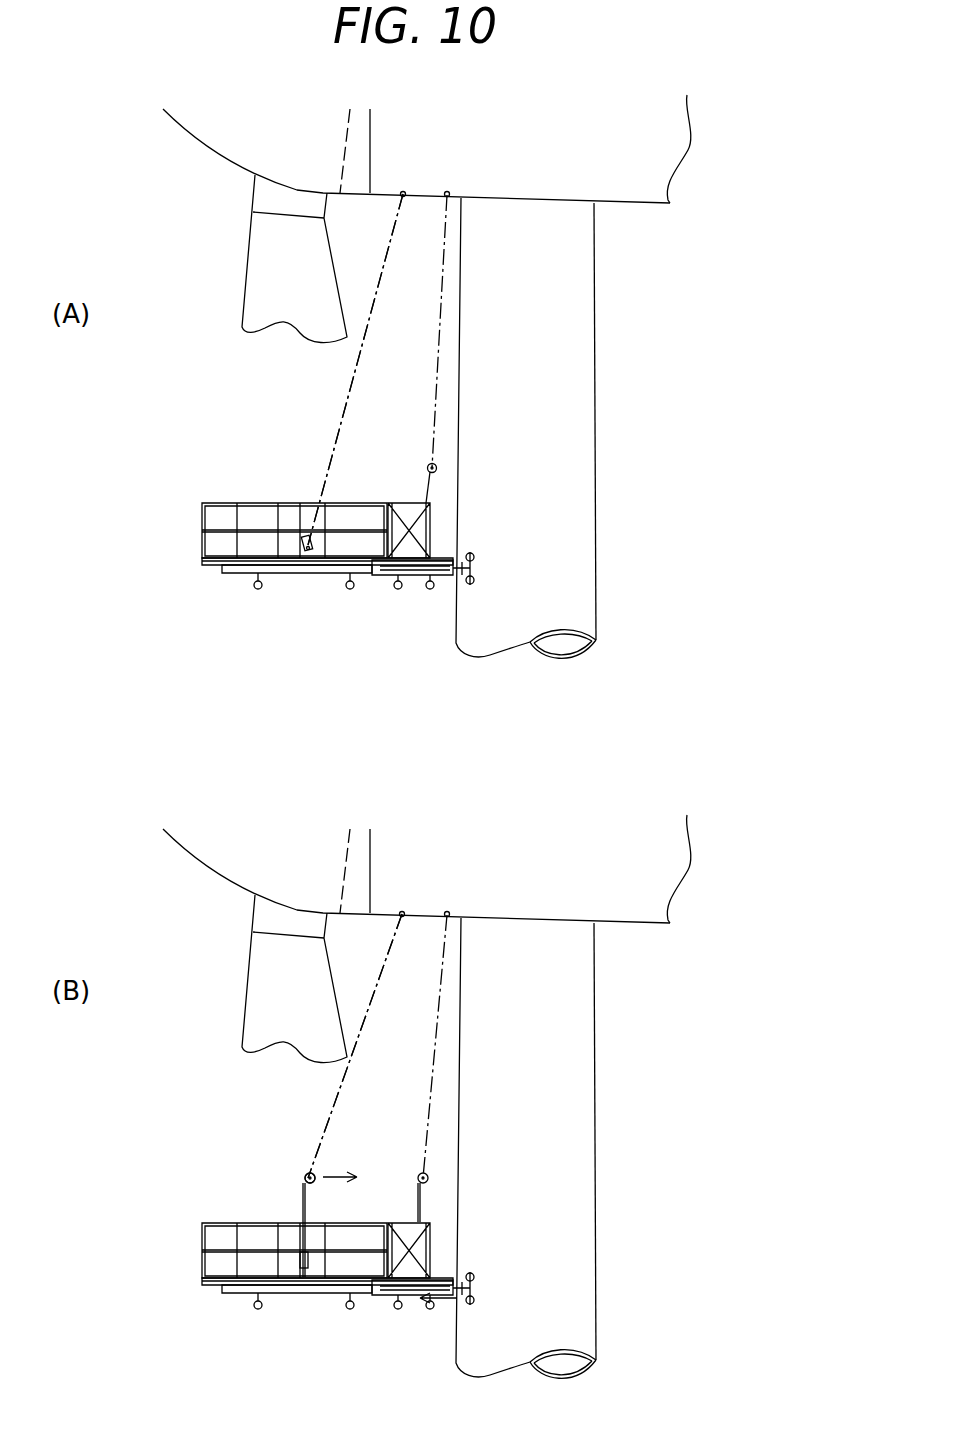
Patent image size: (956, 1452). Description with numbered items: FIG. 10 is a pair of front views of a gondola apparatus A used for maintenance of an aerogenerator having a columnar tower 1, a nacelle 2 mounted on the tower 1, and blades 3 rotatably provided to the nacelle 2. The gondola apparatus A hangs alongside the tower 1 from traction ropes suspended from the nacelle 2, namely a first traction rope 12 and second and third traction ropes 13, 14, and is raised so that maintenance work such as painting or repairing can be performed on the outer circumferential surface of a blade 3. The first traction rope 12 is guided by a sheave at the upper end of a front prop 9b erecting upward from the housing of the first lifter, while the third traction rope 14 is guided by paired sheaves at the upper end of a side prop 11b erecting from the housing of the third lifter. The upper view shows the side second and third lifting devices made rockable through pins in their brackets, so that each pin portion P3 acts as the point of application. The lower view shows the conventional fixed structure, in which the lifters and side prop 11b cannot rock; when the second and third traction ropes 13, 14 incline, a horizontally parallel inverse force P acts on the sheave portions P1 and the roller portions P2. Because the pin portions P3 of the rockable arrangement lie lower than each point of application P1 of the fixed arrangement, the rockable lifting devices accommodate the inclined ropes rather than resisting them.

The columnar tower 1 is at (588, 483).
The nacelle 2 is at (643, 193).
The blade 3 is at (250, 280).
The first traction rope 12 is at (447, 224).
The second traction rope 13 is at (393, 224).
The third traction rope 14 is at (355, 686).
The front prop 9b is at (430, 493).
The side prop 11b is at (320, 495).
The gondola apparatus A is at (328, 594).
The inverse force P is at (327, 1170).
The sheave portion P1 is at (305, 1172).
The roller portion P2 is at (473, 573).
The pin portion P3 is at (308, 550).